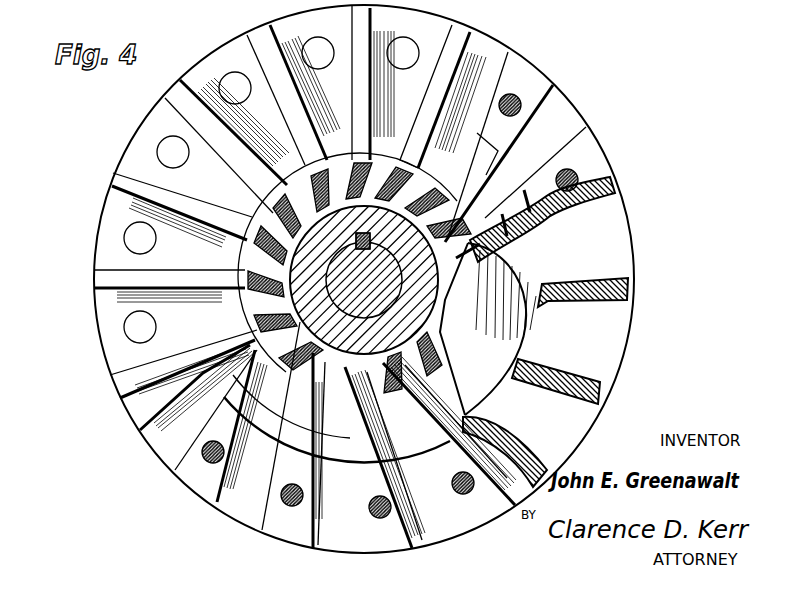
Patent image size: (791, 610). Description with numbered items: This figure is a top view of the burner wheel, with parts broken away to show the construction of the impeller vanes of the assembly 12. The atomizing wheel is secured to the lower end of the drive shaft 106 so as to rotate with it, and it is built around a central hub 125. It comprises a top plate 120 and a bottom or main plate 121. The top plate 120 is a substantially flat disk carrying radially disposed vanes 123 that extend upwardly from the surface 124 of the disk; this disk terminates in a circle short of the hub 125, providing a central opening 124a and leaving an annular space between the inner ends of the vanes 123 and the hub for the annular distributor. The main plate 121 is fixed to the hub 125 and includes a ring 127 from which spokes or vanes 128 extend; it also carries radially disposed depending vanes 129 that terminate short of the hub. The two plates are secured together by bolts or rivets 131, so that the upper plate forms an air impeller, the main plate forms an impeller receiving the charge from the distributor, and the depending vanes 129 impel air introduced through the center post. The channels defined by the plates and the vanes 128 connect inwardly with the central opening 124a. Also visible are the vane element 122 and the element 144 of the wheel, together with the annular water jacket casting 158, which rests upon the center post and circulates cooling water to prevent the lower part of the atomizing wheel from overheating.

The rotor disc 12 is at (634, 213).
The drive shaft 106 is at (400, 287).
The top plate 120 is at (102, 242).
The main plate 121 is at (597, 131).
The vane 122 is at (525, 79).
The vanes 123 is at (96, 281).
The surface 124 is at (112, 207).
The central opening 124a is at (262, 203).
The hub 125 is at (296, 289).
The ring 127 is at (337, 418).
The spokes or vanes 128 is at (193, 478).
The depending vanes 129 is at (600, 384).
The bolts or rivets 131 is at (128, 331).
The rib 144 is at (162, 443).
The annular water jacket casting 158 is at (618, 321).